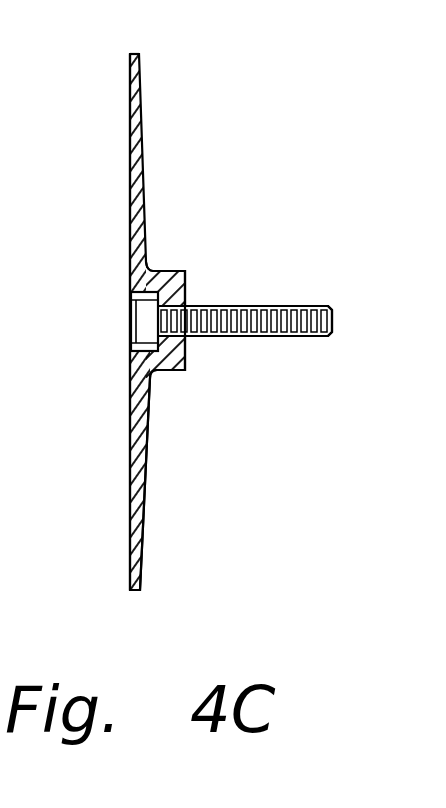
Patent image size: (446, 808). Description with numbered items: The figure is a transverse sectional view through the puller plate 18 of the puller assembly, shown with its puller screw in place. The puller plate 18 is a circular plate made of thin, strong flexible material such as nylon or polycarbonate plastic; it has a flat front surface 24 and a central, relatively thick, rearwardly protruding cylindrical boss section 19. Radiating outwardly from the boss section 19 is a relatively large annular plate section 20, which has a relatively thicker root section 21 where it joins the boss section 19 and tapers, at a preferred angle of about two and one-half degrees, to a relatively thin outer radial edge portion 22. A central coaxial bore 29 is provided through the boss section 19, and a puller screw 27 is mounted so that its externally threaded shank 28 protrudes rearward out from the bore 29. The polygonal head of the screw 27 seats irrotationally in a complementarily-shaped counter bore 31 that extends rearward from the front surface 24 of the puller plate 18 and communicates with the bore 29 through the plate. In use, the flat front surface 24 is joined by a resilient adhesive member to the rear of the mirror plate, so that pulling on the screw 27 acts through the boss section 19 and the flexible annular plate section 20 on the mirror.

The puller plate 18 is at (269, 161).
The boss section 19 is at (150, 268).
The annular plate section 20 is at (145, 158).
The root section 21 is at (128, 210).
The outer radial edge portion 22 is at (141, 70).
The front surface 24 is at (130, 490).
The puller screw 27 is at (330, 307).
The externally threaded shank 28 is at (280, 337).
The central coaxial bore 29 is at (172, 328).
The counter bore 31 is at (128, 312).